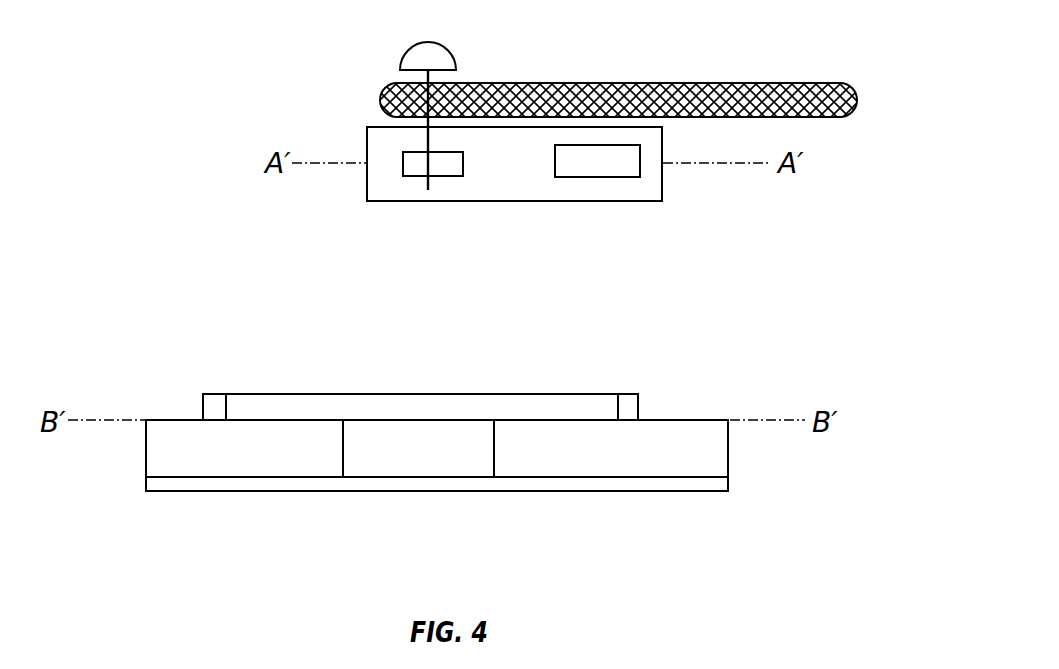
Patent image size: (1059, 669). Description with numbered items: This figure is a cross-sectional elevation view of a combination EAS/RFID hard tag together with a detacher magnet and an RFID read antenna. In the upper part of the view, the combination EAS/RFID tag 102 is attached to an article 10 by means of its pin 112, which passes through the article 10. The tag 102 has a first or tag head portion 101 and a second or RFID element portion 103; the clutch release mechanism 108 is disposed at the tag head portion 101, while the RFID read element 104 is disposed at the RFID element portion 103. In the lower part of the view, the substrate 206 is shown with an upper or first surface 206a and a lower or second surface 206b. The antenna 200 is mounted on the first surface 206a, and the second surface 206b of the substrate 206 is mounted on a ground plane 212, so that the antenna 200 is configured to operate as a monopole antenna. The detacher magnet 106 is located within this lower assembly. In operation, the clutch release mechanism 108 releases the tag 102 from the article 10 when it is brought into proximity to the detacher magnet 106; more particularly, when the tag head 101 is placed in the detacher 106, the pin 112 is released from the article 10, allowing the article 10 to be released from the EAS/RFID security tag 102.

The article 10 is at (700, 83).
The pin 112 is at (423, 42).
The tag head portion 101 is at (367, 190).
The combination EAS/RFID tag 102 is at (573, 203).
The RFID element portion 103 is at (642, 163).
The RFID read element 104 is at (657, 173).
The clutch release mechanism 108 is at (465, 163).
The antenna 200 is at (306, 393).
The substrate 206 is at (728, 453).
The first surface 206a is at (668, 420).
The second surface 206b is at (556, 478).
The detacher magnet 106 is at (418, 460).
The ground plane 212 is at (680, 493).